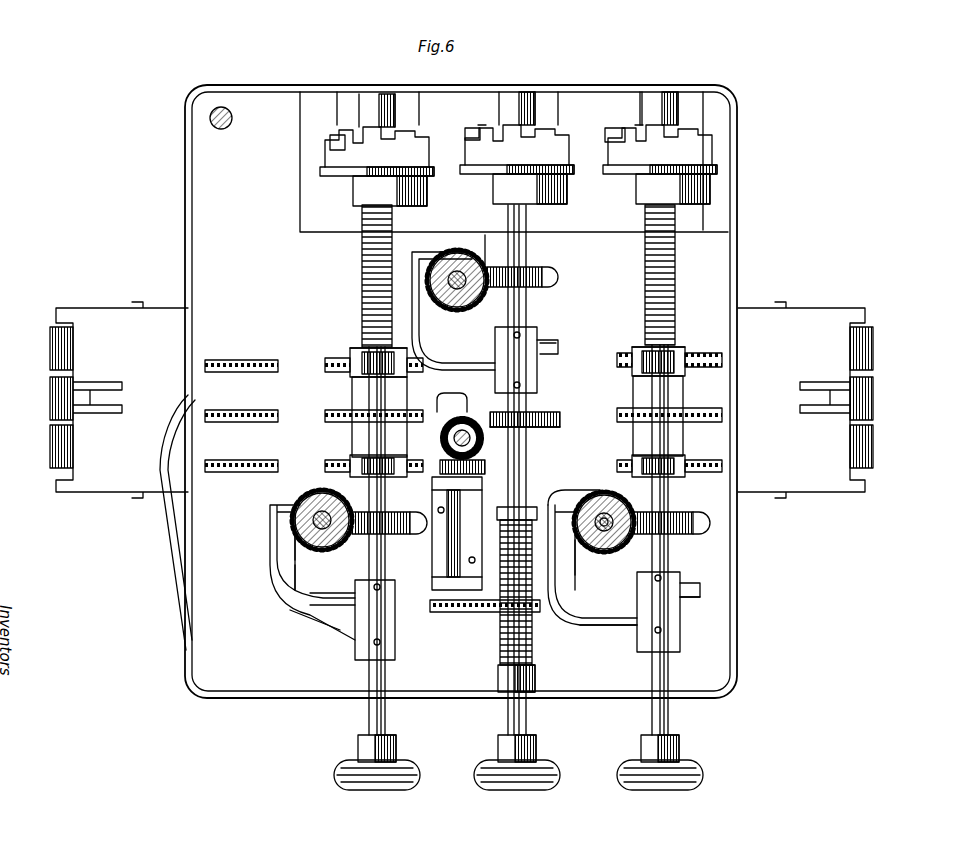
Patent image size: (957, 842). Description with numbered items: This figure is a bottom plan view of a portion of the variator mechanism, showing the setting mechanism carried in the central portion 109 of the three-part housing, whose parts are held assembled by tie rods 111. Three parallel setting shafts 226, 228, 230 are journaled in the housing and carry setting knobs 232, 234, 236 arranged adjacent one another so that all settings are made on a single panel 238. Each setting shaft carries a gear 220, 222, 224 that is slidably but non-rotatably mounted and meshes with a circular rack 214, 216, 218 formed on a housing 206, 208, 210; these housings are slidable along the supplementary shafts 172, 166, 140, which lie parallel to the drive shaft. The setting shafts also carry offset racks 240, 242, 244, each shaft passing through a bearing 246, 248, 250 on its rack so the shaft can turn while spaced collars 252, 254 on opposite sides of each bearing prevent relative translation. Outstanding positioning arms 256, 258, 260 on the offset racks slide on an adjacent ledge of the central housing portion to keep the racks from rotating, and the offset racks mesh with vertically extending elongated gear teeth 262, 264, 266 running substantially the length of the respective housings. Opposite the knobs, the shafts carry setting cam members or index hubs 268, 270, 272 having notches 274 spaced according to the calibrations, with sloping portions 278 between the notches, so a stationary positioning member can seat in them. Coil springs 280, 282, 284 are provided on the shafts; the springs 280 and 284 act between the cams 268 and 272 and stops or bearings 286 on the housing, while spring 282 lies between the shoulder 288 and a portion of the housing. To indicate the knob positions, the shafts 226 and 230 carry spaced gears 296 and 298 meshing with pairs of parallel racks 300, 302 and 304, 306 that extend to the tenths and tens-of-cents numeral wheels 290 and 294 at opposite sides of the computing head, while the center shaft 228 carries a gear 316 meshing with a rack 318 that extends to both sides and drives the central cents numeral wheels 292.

The central portion of the housing 109 is at (725, 92).
The tie rods 111 is at (214, 107).
The supplementary shaft 140 is at (548, 505).
The supplementary shaft 166 is at (530, 268).
The tenths cent supplementary shaft 172 is at (300, 565).
The housing 206 is at (300, 540).
The housing 208 is at (430, 278).
The housing 210 is at (635, 540).
The circular rack 214 is at (300, 500).
The circular rack 216 is at (485, 250).
The circular rack 218 is at (604, 490).
The gear 220 is at (343, 545).
The gear 222 is at (556, 277).
The gear 224 is at (700, 522).
The setting shaft 226 is at (368, 727).
The setting shaft 228 is at (507, 727).
The setting shaft 230 is at (670, 722).
The setting knob 232 is at (335, 773).
The setting knob 234 is at (473, 773).
The setting knob 236 is at (703, 773).
The panel 238 is at (245, 699).
The offset rack 240 is at (330, 620).
The offset rack 242 is at (465, 362).
The offset rack 244 is at (635, 615).
The bearing 246 is at (355, 640).
The bearing 248 is at (540, 365).
The bearing 250 is at (680, 620).
The collar 252 is at (645, 640).
The collar 254 is at (702, 588).
The positioning arm 256 is at (438, 612).
The positioning arm 258 is at (548, 343).
The positioning arm 260 is at (702, 597).
The elongated gear teeth 262 is at (300, 510).
The elongated gear teeth 264 is at (447, 252).
The elongated gear teeth 266 is at (590, 510).
The setting cam member 268 is at (320, 170).
The setting cam member 270 is at (495, 170).
The setting cam member 272 is at (635, 170).
The notches 274 is at (710, 150).
The sloping portions 278 is at (635, 125).
The coil spring 280 is at (362, 240).
The coil spring 282 is at (500, 645).
The coil spring 284 is at (676, 250).
The stops or bearings 286 is at (685, 350).
The shoulder 288 is at (577, 560).
The numeral wheel 290 is at (873, 424).
The numeral wheel 292 is at (873, 385).
The numeral wheel 294 is at (873, 343).
The spaced gears 296 is at (350, 452).
The spaced gears 298 is at (722, 466).
The rack 300 is at (485, 455).
The rack 302 is at (488, 440).
The rack 304 is at (325, 360).
The rack 306 is at (325, 366).
The gear 316 is at (545, 415).
The rack 318 is at (540, 420).